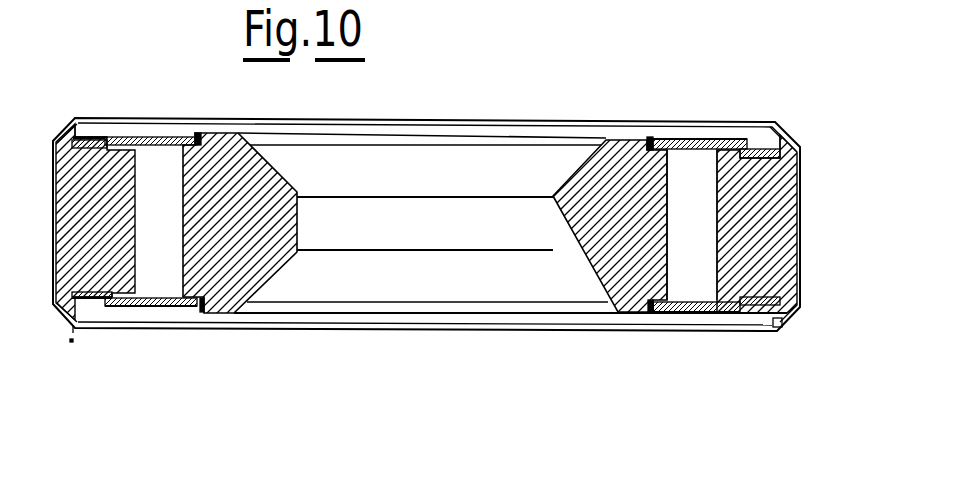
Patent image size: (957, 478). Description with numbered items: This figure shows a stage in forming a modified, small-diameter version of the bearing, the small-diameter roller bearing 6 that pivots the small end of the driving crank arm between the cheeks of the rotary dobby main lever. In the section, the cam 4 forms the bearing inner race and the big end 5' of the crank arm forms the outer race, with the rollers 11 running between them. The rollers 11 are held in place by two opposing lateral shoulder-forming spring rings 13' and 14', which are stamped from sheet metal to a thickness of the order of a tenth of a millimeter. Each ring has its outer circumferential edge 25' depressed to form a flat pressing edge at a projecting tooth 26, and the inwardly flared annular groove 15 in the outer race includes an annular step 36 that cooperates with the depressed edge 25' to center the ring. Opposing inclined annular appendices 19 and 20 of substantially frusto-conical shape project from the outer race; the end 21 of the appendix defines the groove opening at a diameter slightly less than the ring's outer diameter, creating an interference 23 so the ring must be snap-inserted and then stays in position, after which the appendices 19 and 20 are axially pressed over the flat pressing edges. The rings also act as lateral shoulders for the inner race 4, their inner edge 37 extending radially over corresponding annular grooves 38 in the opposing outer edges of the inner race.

The cam 4 is at (278, 272).
The big end 5' is at (478, 220).
The small-diameter roller bearing 6 is at (572, 105).
The rollers 11 is at (696, 292).
The shoulder-forming spring ring 13' is at (427, 196).
The shoulder-forming spring ring 14' is at (427, 255).
The annular groove 15 is at (741, 126).
The inclined annular appendix 19 is at (447, 132).
The inclined annular appendix 20 is at (427, 318).
The end of annular appendix 21 is at (773, 125).
The interference 23 is at (72, 343).
The depressed outer circumferential edge 25' is at (427, 212).
The projecting tooth 26 is at (78, 140).
The annular step 36 is at (130, 140).
The inner edge 37 is at (192, 140).
The annular groove 38 is at (651, 134).